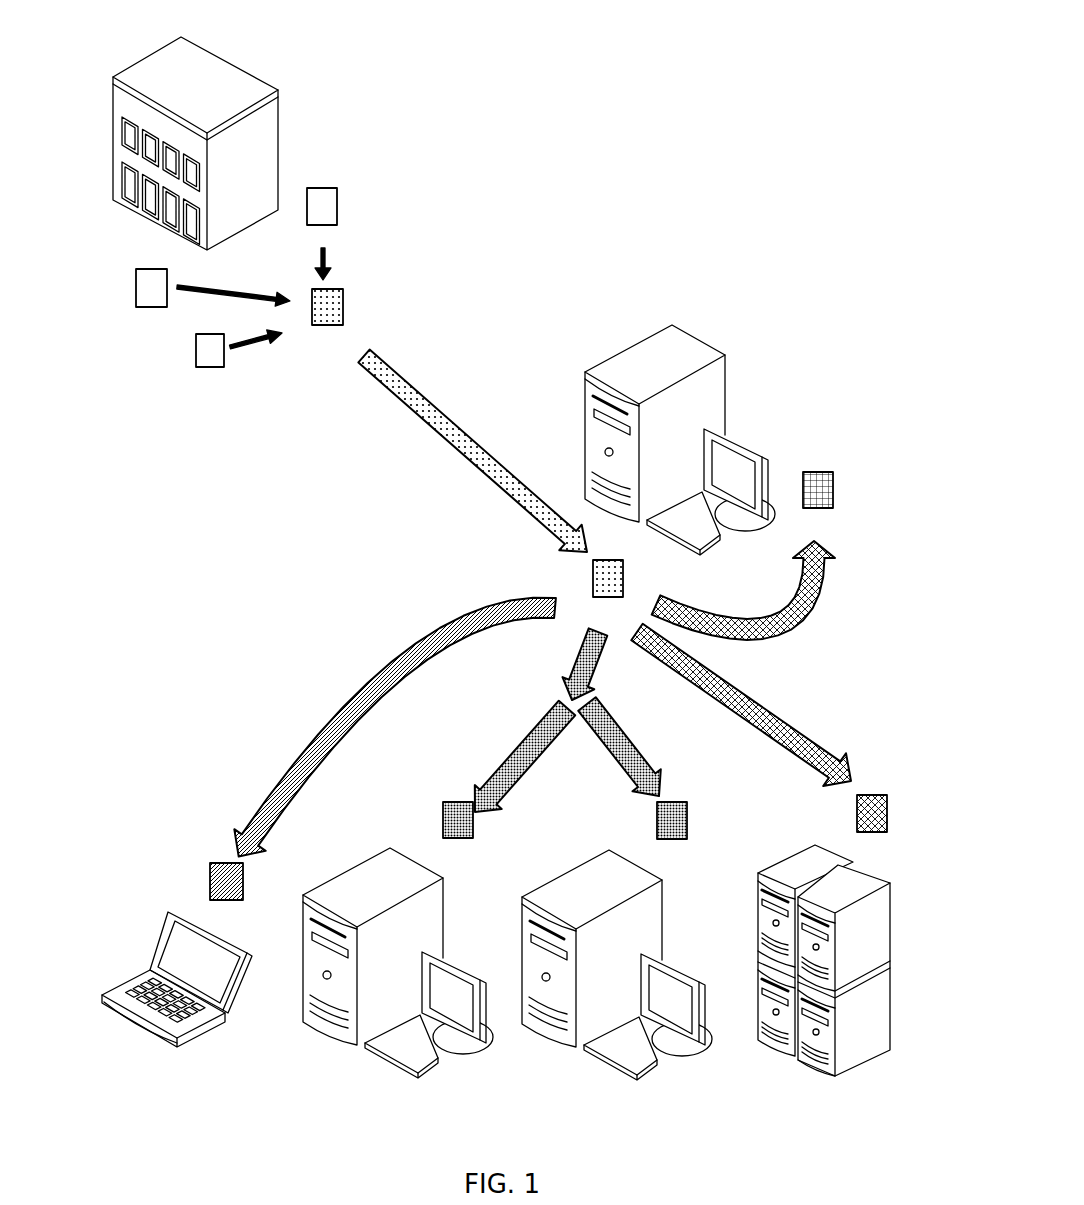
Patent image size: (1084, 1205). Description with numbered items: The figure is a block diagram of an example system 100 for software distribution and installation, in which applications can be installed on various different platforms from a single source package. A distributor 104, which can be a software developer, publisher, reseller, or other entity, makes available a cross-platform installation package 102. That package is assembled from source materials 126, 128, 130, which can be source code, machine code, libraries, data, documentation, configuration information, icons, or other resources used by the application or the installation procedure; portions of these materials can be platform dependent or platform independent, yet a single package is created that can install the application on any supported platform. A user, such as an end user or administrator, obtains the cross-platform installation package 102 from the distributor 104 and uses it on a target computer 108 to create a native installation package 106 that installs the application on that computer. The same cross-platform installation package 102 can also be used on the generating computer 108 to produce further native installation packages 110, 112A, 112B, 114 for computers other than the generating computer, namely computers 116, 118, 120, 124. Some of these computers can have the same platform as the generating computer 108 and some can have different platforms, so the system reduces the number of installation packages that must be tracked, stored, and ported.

The system 100 is at (690, 150).
The cross-platform installation package 102 is at (343, 296).
The distributor 104 is at (125, 66).
The native installation package 106 is at (833, 473).
The target computer 108 is at (729, 367).
The native installation package 110 is at (210, 866).
The native installation package 112A is at (443, 805).
The native installation package 112B is at (688, 812).
The native installation package 114 is at (887, 812).
The computer 116 is at (143, 1035).
The computer 118 is at (343, 1043).
The computer 120 is at (562, 1045).
The computer 124 is at (780, 1055).
The source material 126 is at (337, 197).
The source material 128 is at (136, 278).
The source material 130 is at (170, 385).